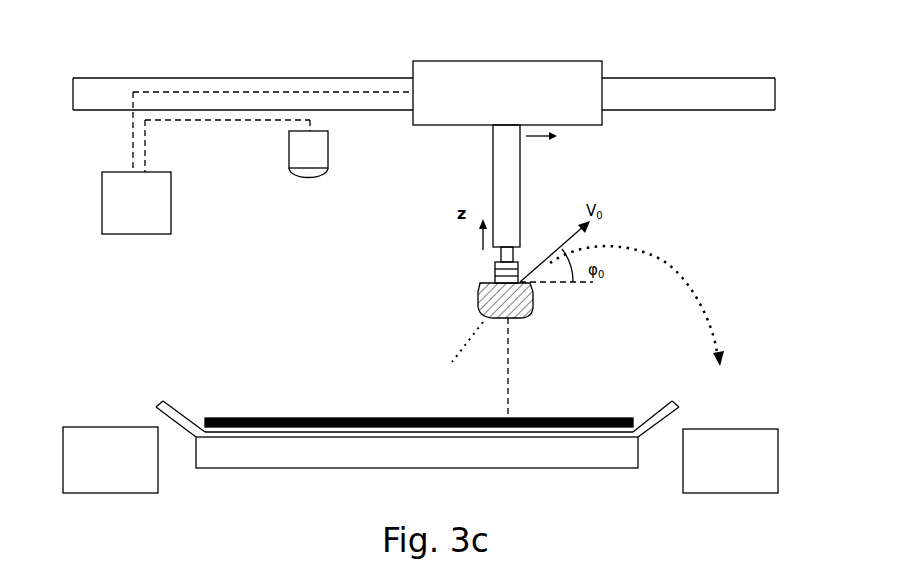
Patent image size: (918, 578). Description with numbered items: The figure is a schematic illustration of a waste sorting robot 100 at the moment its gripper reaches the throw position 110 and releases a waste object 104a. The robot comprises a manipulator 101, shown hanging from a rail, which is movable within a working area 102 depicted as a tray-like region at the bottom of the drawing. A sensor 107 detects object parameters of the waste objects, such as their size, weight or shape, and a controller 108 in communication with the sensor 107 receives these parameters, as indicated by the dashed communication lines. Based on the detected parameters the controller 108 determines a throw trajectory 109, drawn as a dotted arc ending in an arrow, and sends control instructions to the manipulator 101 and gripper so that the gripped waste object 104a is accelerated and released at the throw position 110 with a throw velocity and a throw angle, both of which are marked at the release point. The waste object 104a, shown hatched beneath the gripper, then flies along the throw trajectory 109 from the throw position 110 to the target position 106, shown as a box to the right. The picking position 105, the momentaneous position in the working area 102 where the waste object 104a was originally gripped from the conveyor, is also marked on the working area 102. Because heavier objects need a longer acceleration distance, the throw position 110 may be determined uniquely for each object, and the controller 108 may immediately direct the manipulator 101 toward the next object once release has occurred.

The waste sorting robot 100 is at (148, 54).
The manipulator 101 is at (508, 70).
The working area 102 is at (287, 418).
The waste object 104a is at (478, 301).
The picking position 105 is at (436, 418).
The target position 106 is at (737, 428).
The sensor 107 is at (307, 177).
The controller 108 is at (136, 203).
The throw trajectory 109 is at (660, 258).
The throw position 110 is at (495, 279).